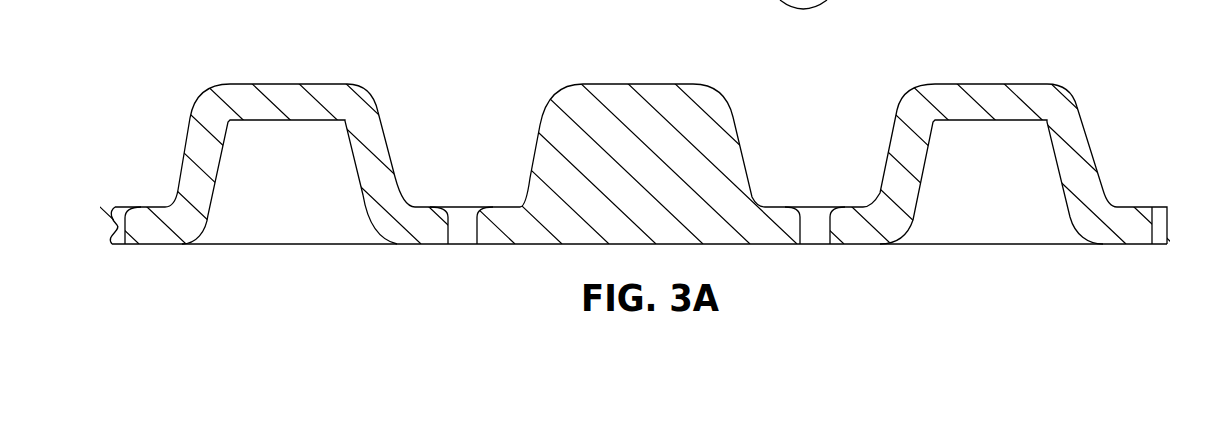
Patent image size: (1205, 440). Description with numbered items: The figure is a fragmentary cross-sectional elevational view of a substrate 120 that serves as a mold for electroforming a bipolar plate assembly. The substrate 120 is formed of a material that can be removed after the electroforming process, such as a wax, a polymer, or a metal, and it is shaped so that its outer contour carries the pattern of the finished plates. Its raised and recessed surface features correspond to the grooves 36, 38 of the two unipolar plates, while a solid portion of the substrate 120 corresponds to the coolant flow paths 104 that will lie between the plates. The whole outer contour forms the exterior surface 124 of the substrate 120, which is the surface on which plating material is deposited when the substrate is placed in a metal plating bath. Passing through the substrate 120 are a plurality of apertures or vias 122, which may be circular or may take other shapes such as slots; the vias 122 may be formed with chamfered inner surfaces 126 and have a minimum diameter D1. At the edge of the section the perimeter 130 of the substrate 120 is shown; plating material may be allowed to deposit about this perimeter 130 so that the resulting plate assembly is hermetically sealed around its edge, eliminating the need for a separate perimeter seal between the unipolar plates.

The substrate 120 is at (480, 124).
The vias 122 is at (306, 52).
The coolant flow paths 104 is at (657, 168).
The grooves 36 is at (800, 144).
The grooves 38 is at (978, 182).
The exterior surface 124 is at (1068, 88).
The chamfered inner surfaces 126 is at (480, 246).
The minimum diameter D1 is at (800, 237).
The perimeter 130 is at (1160, 247).